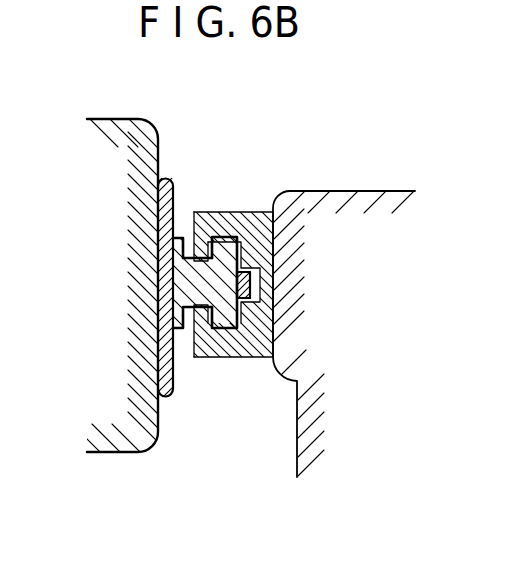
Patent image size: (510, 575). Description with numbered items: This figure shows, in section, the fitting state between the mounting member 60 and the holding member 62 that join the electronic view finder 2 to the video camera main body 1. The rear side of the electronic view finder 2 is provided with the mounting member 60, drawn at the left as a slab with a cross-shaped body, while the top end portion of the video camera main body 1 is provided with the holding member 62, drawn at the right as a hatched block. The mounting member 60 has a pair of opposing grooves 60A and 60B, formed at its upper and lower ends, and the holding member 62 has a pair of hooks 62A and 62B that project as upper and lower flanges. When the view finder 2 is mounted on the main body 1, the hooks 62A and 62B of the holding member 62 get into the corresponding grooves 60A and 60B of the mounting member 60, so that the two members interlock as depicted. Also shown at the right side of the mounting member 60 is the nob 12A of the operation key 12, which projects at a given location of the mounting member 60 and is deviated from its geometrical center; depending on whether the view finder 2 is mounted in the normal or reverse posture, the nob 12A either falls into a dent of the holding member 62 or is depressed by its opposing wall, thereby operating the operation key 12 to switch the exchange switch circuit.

The video camera main body 1 is at (357, 187).
The electronic view finder 2 is at (112, 116).
The operation key 12 is at (242, 298).
The nob 12A is at (249, 283).
The mounting member 60 is at (180, 306).
The groove 60A is at (188, 244).
The groove 60B is at (190, 330).
The holding member 62 is at (254, 232).
The hook 62A is at (206, 232).
The hook 62B is at (205, 326).